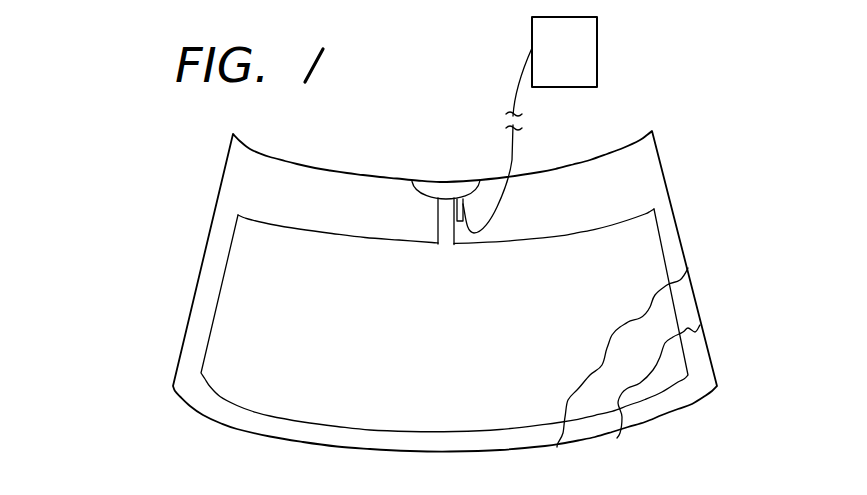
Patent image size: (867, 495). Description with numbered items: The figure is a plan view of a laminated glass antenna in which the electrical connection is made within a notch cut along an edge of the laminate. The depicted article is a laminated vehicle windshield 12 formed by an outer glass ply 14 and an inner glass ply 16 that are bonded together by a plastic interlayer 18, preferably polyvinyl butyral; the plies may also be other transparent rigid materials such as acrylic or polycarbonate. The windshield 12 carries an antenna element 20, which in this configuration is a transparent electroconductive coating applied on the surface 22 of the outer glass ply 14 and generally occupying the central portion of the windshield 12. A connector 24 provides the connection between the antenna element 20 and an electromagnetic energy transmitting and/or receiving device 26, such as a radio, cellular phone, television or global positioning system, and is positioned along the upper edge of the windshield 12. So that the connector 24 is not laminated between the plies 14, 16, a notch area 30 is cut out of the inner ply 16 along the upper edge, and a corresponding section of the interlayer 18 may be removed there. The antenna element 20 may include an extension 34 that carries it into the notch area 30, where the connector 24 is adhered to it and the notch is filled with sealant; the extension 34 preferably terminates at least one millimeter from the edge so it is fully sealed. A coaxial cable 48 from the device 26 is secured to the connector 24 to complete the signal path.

The laminated vehicle windshield 12 is at (431, 309).
The outer glass ply 14 is at (715, 363).
The inner glass ply 16 is at (653, 299).
The plastic interlayer 18 is at (663, 338).
The antenna element 20 is at (643, 407).
The surface of glass ply 22 is at (688, 395).
The connector 24 is at (432, 210).
The electromagnetic energy transmitting and/or receiving device 26 is at (566, 70).
The notch area 30 is at (423, 191).
The extension 34 is at (440, 221).
The coaxial cable 48 is at (510, 152).